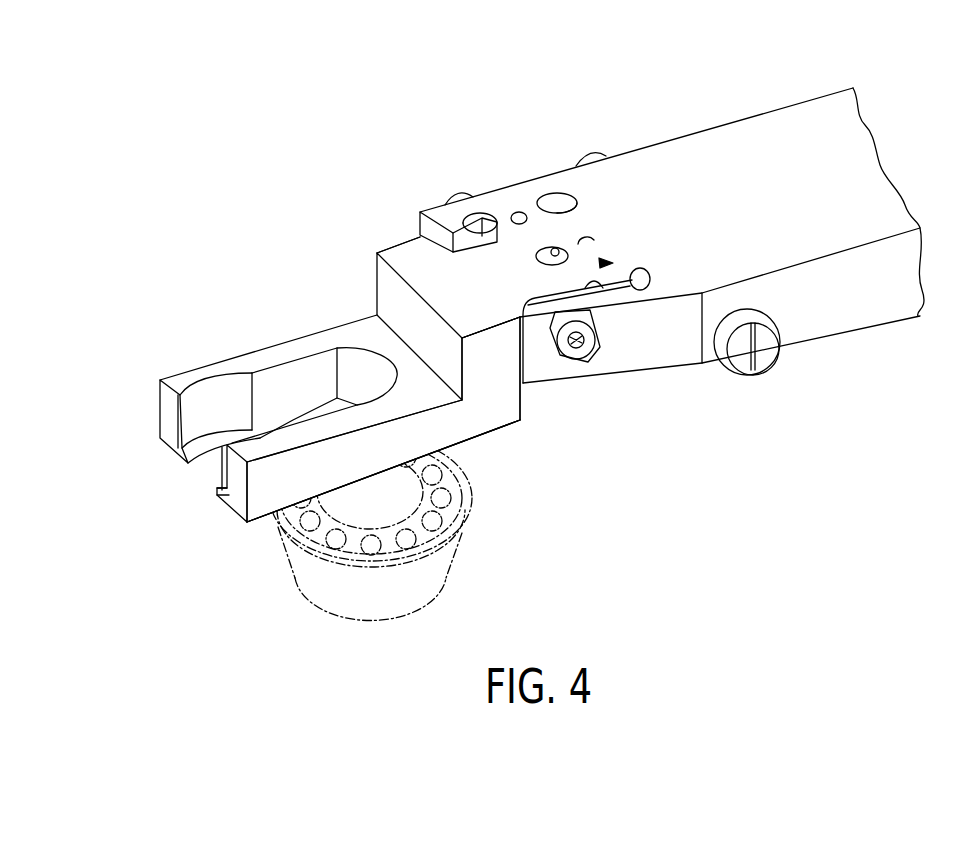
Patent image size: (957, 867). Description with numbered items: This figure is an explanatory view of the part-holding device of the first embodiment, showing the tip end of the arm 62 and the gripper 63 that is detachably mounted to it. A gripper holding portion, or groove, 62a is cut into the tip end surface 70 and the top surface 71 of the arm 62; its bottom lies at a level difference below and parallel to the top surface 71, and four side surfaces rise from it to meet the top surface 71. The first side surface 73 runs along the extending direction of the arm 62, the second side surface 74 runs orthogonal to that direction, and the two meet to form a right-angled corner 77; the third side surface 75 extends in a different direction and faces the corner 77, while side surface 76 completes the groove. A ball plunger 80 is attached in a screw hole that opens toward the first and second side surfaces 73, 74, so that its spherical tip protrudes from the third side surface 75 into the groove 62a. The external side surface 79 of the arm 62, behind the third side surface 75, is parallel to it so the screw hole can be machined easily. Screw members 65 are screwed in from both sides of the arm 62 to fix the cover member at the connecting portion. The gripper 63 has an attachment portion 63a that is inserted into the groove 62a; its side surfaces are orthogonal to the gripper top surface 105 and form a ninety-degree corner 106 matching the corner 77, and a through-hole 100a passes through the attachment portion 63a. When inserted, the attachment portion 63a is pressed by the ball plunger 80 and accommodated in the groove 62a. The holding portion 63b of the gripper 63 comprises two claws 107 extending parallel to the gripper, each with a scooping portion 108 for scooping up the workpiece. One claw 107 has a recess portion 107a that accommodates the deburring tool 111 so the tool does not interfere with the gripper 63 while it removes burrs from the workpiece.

The arm 62 is at (692, 70).
The gripper holding portion (groove) 62a is at (618, 260).
The gripper 63 is at (248, 282).
The attachment portion 63a is at (440, 265).
The holding portion 63b is at (220, 338).
The screw members 65 is at (457, 192).
The tip end surface 70 is at (411, 225).
The top surface 71 is at (753, 132).
The first side surface 73 is at (520, 222).
The second side surface 74 is at (613, 232).
The third side surface 75 is at (603, 282).
The side surface 76 is at (497, 224).
The corner 77 is at (543, 212).
The external side surface 79 is at (680, 345).
The ball plunger 80 is at (572, 362).
The through-hole 100a is at (556, 252).
The top surface 105 is at (520, 262).
The corner 106 is at (554, 210).
The claws 107 is at (195, 366).
The recess portion 107a is at (487, 437).
The scooping portion 108 is at (187, 448).
The deburring tool 111 is at (460, 537).